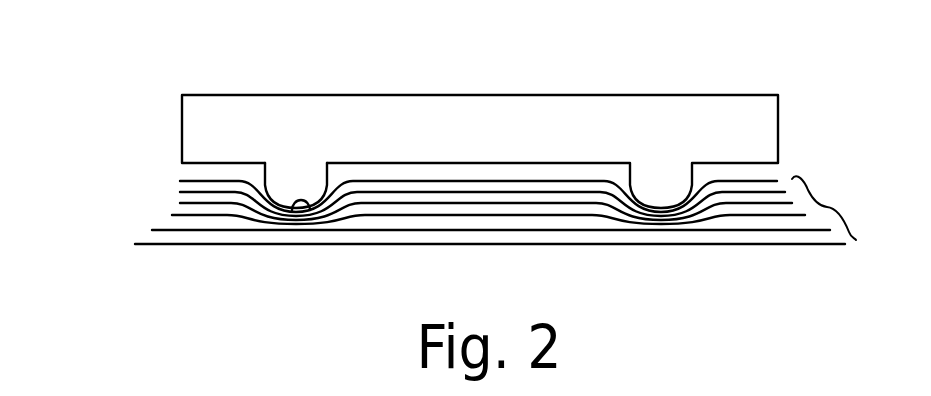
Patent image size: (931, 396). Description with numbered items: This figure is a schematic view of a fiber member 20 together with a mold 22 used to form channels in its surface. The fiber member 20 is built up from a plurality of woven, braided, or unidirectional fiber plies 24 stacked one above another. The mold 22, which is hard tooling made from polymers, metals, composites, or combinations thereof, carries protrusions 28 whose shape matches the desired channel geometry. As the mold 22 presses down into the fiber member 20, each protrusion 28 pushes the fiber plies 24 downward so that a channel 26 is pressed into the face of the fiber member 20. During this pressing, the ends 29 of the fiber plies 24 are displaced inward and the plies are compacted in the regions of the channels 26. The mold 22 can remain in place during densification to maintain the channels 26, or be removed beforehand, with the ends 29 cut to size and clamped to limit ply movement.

The fiber member 20 is at (732, 245).
The mold 22 is at (463, 136).
The fiber plies 24 is at (190, 203).
The channel 26 is at (307, 202).
The protrusion 28 is at (327, 173).
The ends 29 is at (827, 208).